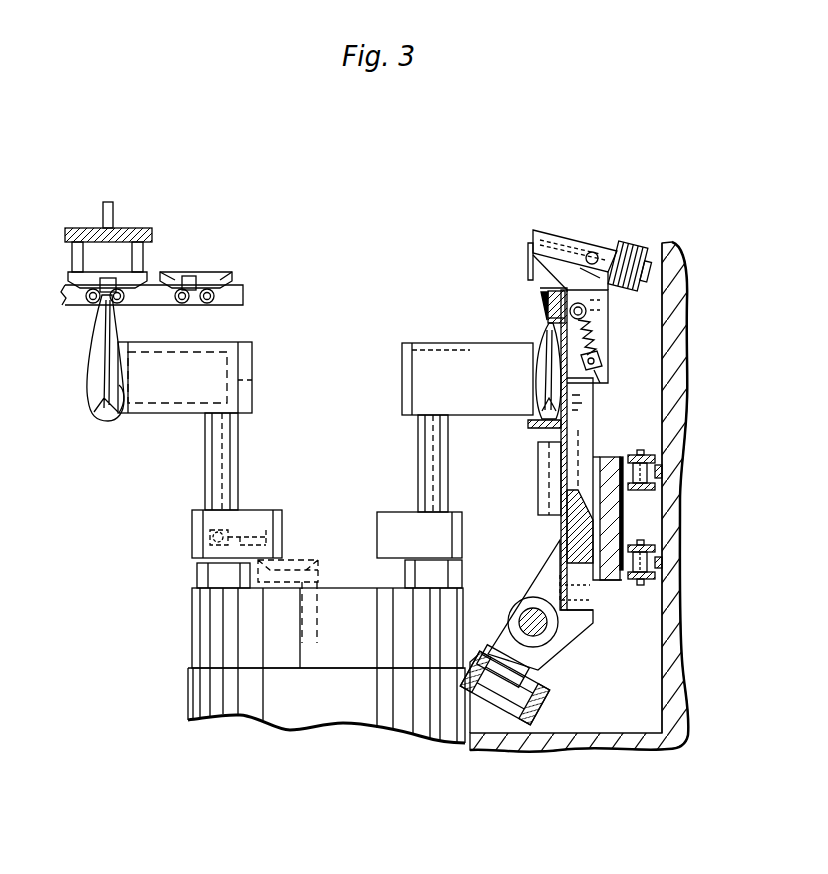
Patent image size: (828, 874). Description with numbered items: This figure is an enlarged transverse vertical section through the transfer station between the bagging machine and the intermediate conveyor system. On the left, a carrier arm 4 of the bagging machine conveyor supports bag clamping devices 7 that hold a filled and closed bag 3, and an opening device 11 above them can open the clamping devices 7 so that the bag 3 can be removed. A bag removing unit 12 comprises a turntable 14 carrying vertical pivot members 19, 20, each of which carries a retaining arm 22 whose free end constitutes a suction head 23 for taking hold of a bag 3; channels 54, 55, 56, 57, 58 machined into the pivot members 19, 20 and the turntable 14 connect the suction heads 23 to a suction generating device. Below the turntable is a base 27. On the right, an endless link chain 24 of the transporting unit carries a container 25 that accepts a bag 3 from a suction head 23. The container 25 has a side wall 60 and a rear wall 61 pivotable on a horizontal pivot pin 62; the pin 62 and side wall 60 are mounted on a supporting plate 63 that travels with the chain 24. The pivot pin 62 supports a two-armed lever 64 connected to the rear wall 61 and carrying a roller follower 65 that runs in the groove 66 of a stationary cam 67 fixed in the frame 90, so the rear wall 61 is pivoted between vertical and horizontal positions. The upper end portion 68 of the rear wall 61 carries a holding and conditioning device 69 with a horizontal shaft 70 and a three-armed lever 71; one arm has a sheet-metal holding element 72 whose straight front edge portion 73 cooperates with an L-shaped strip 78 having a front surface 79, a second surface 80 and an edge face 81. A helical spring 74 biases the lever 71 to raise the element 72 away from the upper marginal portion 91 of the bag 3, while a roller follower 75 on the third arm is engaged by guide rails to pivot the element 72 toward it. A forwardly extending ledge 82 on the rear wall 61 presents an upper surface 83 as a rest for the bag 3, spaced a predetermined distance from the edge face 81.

The filled and closed bag 3 is at (90, 402).
The arm 4 is at (232, 288).
The bag clamping device 7 is at (140, 276).
The opening device 11 is at (118, 240).
The bag removing unit 12 is at (319, 326).
The turntable 14 is at (200, 630).
The vertical pivot member 19 is at (238, 440).
The vertical pivot member 20 is at (418, 440).
The retaining arm 22 is at (165, 398).
The suction head 23 is at (119, 413).
The endless link chain 24 is at (640, 453).
The container 25 is at (491, 306).
The foot 27 is at (188, 704).
The channel 54 is at (218, 355).
The channel 55 is at (252, 383).
The channel 56 is at (265, 530).
The channel 57 is at (300, 558).
The channel 58 is at (312, 618).
The side wall 60 is at (548, 520).
The rear wall 61 is at (594, 386).
The pivot pin 62 is at (522, 612).
The supporting plate 63 is at (614, 520).
The two-armed lever 64 is at (585, 626).
The roller follower 65 is at (490, 655).
The groove 66 is at (510, 705).
The stationary cam 67 is at (522, 708).
The upper end portion 68 is at (608, 310).
The holding and conditioning device 69 is at (529, 212).
The horizontal shaft 70 is at (594, 252).
The three-armed lever 71 is at (612, 255).
The holding and conditioning element 72 is at (528, 262).
The front edge portion 73 is at (528, 278).
The helical spring 74 is at (600, 342).
The roller follower 75 is at (638, 255).
The holding strip 78 is at (560, 292).
The front surface 79 is at (541, 343).
The second surface 80 is at (556, 288).
The edge face 81 is at (530, 250).
The ledge 82 is at (548, 448).
The upper surface 83 is at (570, 415).
The frame 90 is at (680, 272).
The upper marginal portion 91 is at (541, 305).